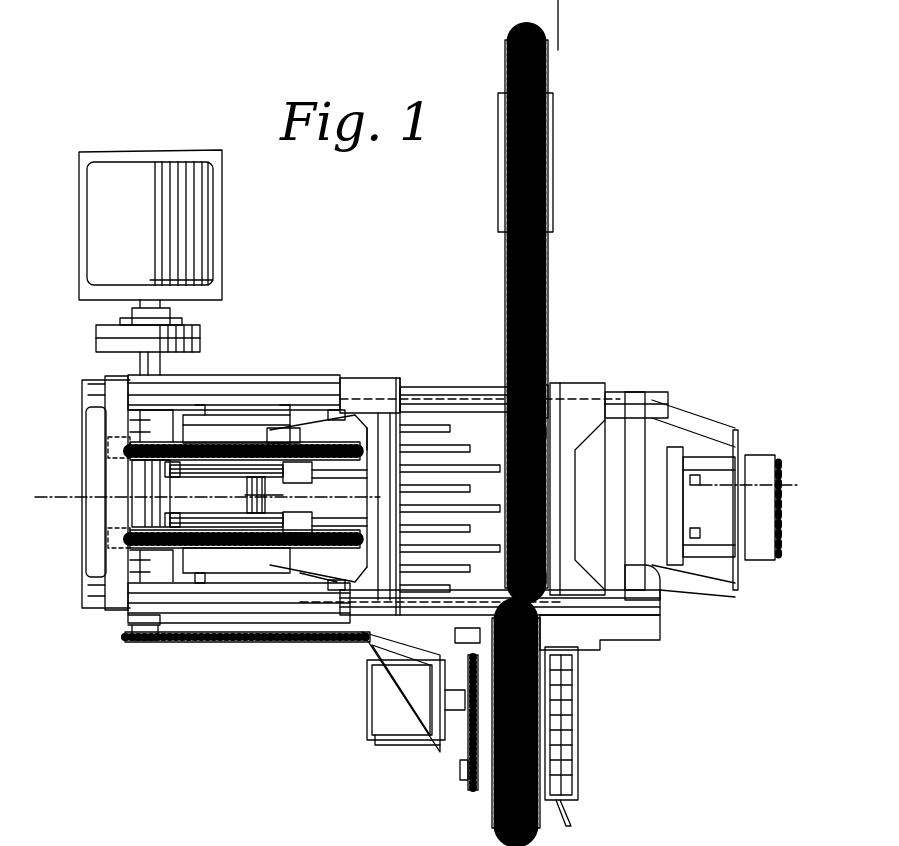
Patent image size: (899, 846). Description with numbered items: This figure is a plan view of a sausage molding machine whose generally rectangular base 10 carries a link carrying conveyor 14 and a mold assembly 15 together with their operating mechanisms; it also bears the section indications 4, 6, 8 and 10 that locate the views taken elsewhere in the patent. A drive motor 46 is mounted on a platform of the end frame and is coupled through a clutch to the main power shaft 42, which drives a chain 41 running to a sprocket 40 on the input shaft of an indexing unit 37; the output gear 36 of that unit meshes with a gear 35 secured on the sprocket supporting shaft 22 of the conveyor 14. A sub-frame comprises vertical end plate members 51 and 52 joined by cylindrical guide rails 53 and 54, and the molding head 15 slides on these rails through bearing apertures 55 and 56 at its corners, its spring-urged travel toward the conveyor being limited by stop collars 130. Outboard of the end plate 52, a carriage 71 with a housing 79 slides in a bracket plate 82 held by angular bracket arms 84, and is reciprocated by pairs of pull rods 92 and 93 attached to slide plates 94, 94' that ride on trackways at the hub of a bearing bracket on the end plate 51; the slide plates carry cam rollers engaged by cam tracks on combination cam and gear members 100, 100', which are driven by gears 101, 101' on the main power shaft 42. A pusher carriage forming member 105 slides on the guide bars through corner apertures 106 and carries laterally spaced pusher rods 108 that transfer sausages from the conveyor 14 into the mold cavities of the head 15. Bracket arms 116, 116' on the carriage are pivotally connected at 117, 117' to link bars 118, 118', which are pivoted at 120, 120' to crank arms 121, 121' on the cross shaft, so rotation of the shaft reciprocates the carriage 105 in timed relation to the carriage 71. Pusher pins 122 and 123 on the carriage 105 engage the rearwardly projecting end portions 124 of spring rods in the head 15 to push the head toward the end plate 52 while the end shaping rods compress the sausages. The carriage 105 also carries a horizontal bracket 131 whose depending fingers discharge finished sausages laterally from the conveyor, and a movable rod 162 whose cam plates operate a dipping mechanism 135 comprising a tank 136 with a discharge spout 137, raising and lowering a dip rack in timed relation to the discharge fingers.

The section line 4- 4 is at (785, 407).
The section line 6- 6 is at (562, 23).
The section line 8- 8 is at (800, 513).
The base 10 is at (805, 505).
The link carrying conveyor 14 is at (530, 302).
The mold assembly 15 is at (580, 383).
The sprocket supporting shaft 22 is at (490, 795).
The gear 35 is at (462, 785).
The output gear 36 is at (466, 658).
The indexing unit 37 is at (368, 708).
The sprocket 40 is at (440, 648).
The drive chain 41 is at (308, 625).
The main power shaft 42 is at (140, 638).
The drive motor 46 is at (215, 230).
The end plate member 51 is at (110, 600).
The end plate member 52 is at (640, 395).
The guide rail 53 is at (262, 615).
The guide rail 54 is at (280, 380).
The bearing aperture 55 is at (592, 638).
The bearing aperture 56 is at (605, 392).
The carriage 71 is at (700, 452).
The housing 79 is at (760, 560).
The bracket plate 82 is at (738, 445).
The angular bracket arm 84 is at (700, 422).
The pull rod 92 is at (338, 528).
The pull rod 93 is at (342, 478).
The slide plate 94 is at (226, 510).
The slide plate 94' is at (226, 478).
The combination cam and gear member 100 is at (330, 564).
The combination cam and gear member 100' is at (366, 506).
The gear 101 is at (200, 543).
The gear 101' is at (198, 437).
The carriage forming member 105 is at (377, 378).
The aperture 106 is at (402, 390).
The pusher rod 108 is at (450, 505).
The bracket arm 116 is at (323, 623).
The bracket arm 116' is at (341, 384).
The pivot connection 117 is at (173, 337).
The pivot connection 117' is at (318, 403).
The link bar 118 is at (236, 608).
The link bar 118' is at (274, 398).
The pivot 120 is at (182, 622).
The pivot 120' is at (170, 397).
The crank arm 121 is at (173, 616).
The crank arm 121' is at (236, 398).
The pusher pin 122 is at (430, 585).
The pusher pin 123 is at (451, 428).
The rearwardly projecting end portion 124 is at (535, 435).
The stop collar 130 is at (545, 385).
The bracket 131 is at (425, 748).
The dipping mechanism 135 is at (578, 692).
The tank 136 is at (580, 737).
The discharge spout 137 is at (568, 812).
The rod 162 is at (642, 603).